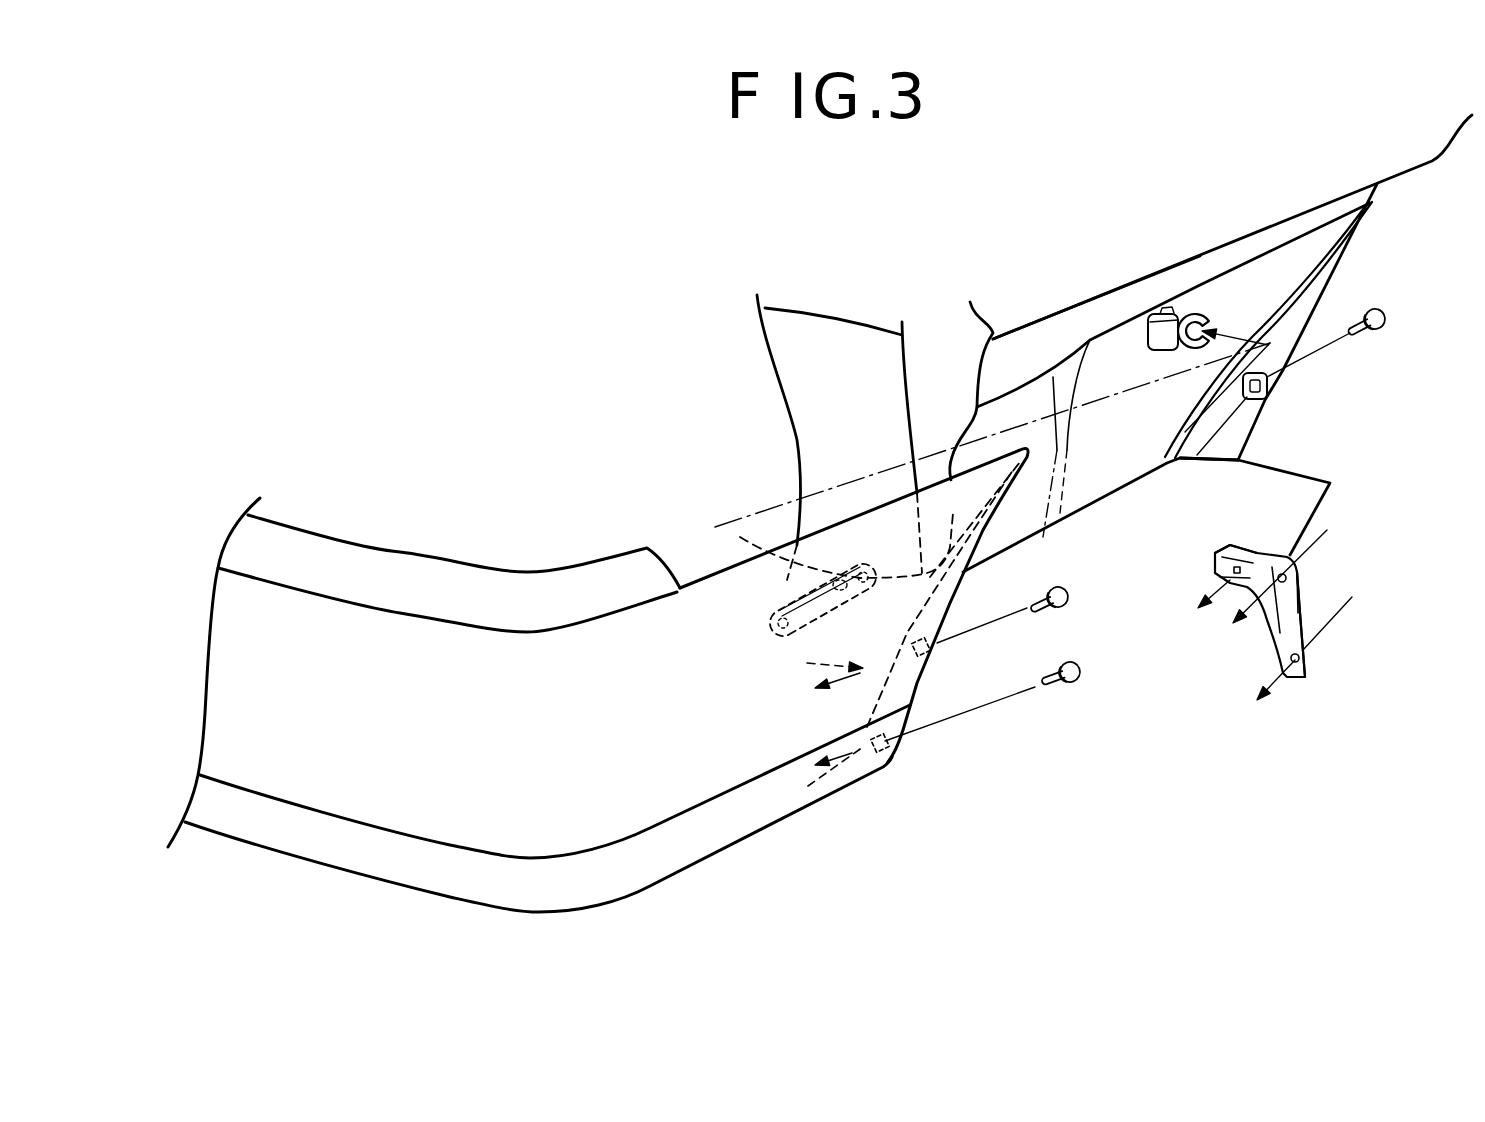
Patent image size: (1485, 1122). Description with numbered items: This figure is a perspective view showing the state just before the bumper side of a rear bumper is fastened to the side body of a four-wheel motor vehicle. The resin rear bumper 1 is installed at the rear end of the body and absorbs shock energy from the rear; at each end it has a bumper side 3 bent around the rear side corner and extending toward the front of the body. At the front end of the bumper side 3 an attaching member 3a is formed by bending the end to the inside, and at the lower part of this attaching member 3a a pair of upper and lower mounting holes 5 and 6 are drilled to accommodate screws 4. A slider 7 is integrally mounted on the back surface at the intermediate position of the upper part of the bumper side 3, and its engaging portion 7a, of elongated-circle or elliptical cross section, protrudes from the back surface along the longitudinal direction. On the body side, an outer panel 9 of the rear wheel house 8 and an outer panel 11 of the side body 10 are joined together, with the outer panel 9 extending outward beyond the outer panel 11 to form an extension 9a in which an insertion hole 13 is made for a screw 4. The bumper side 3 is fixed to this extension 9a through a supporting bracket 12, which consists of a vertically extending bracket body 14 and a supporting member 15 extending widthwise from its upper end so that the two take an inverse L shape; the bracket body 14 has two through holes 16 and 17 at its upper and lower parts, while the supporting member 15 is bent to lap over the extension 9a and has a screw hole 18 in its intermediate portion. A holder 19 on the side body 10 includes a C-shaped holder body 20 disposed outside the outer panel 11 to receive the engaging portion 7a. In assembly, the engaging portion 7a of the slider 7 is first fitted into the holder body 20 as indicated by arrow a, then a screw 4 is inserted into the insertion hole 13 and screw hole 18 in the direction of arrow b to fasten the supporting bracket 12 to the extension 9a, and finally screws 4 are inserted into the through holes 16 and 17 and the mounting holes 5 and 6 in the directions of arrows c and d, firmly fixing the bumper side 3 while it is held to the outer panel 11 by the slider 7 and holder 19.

The rear bumper 1 is at (328, 530).
The bumper side 3 is at (735, 773).
The attaching member 3a is at (907, 678).
The screw 4 is at (1068, 588).
The mounting hole 5 is at (950, 607).
The mounting hole 6 is at (892, 760).
The slider 7 is at (757, 594).
The engaging portion 7a is at (838, 580).
The rear wheel house 8 is at (1344, 226).
The outer panel 9 is at (1307, 303).
The extension 9a is at (1243, 448).
The side body 10 is at (1027, 337).
The outer panel 11 is at (1267, 260).
The supporting bracket 12 is at (1266, 602).
The insertion hole 13 is at (1270, 388).
The bracket body 14 is at (1303, 596).
The supporting member 15 is at (1215, 566).
The through hole 16 is at (1292, 560).
The through hole 17 is at (1296, 672).
The screw hole 18 is at (1240, 565).
The holder 19 is at (1170, 313).
The holder body 20 is at (1195, 312).
The arrow a is at (1048, 557).
The arrow b is at (1338, 343).
The arrow c is at (1363, 538).
The arrow d is at (1363, 625).